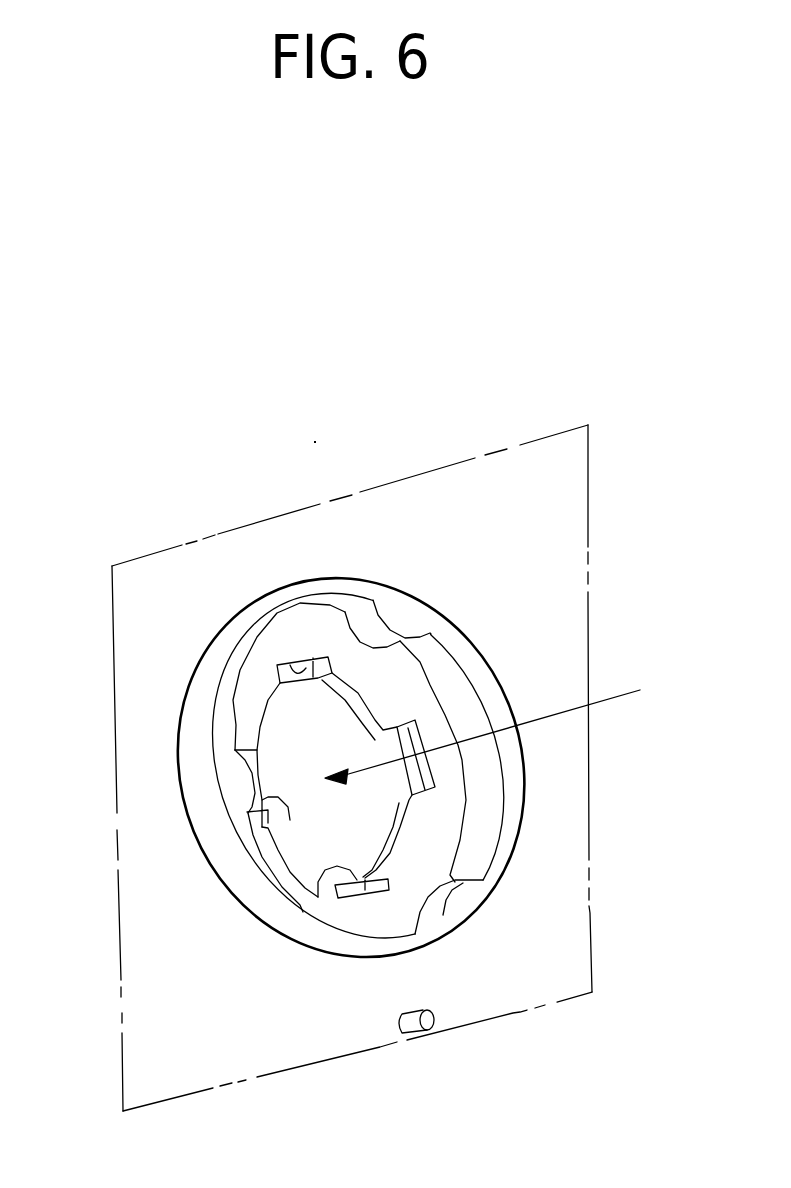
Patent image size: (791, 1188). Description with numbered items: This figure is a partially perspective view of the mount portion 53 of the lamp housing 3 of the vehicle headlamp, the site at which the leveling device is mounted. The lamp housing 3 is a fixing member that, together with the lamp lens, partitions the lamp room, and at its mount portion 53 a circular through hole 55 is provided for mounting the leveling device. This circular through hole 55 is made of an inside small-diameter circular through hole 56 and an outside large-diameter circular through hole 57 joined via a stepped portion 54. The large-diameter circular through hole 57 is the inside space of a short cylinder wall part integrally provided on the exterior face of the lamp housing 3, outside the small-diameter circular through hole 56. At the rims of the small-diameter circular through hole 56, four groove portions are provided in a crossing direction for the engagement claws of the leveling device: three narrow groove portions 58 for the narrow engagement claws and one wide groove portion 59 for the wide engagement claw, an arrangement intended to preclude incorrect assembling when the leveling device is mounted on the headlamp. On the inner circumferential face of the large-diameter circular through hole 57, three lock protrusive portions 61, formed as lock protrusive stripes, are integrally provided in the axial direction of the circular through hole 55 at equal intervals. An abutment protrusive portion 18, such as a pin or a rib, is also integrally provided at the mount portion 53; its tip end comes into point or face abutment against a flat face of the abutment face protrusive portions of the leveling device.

The lamp housing 3 is at (133, 557).
The mount portion 53 is at (203, 618).
The stepped portion 54 is at (280, 647).
The circular through hole 55 is at (690, 722).
The small-diameter circular through hole 56 is at (403, 848).
The large-diameter circular through hole 57 is at (494, 838).
The narrow groove portion 58 is at (313, 657).
The wide groove portion 59 is at (415, 742).
The lock protrusive portion 61 is at (402, 615).
The abutment protrusive portion 18 is at (435, 1035).